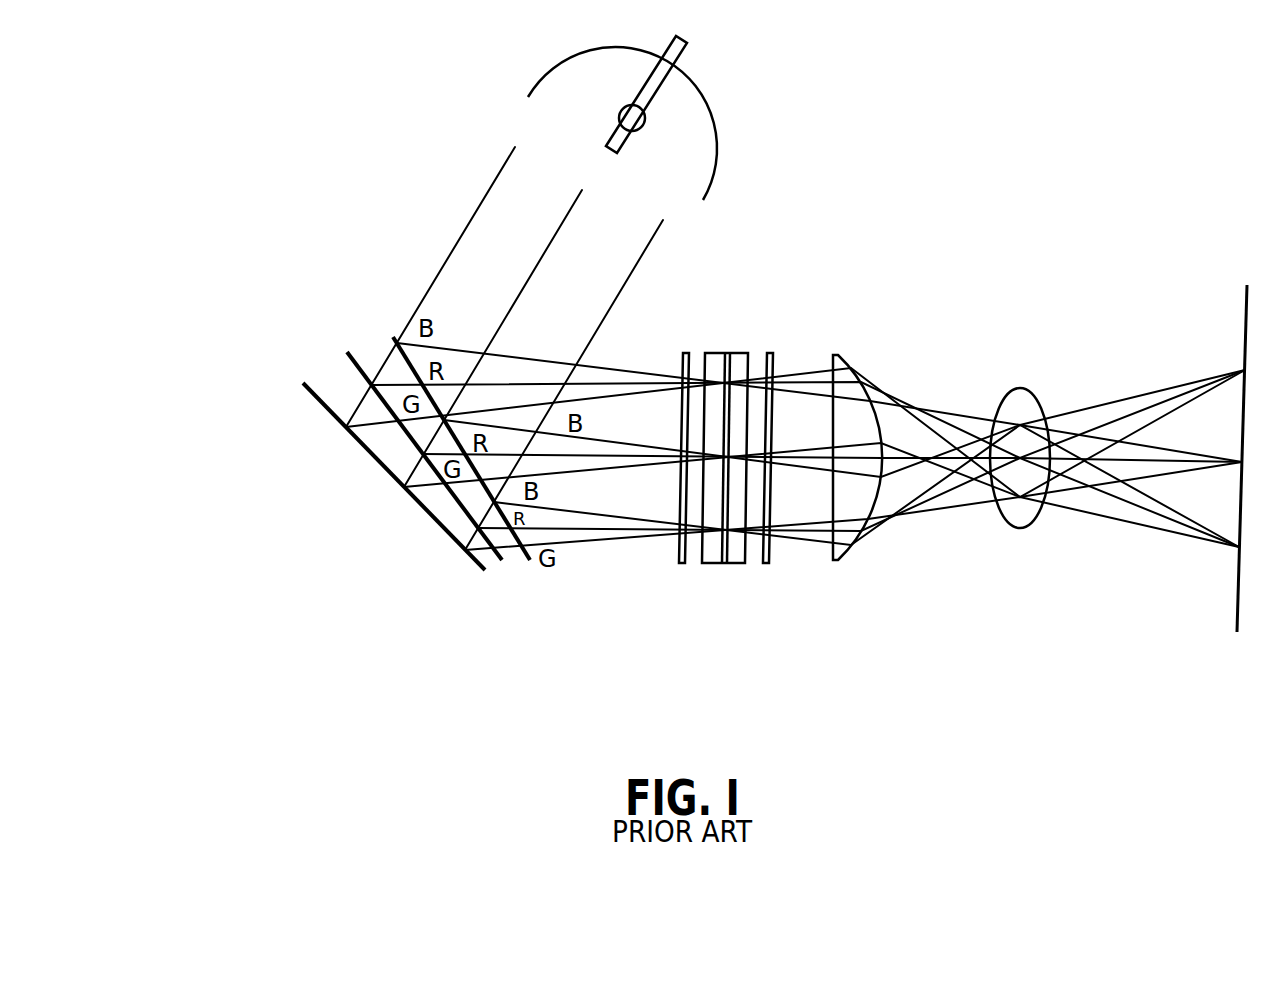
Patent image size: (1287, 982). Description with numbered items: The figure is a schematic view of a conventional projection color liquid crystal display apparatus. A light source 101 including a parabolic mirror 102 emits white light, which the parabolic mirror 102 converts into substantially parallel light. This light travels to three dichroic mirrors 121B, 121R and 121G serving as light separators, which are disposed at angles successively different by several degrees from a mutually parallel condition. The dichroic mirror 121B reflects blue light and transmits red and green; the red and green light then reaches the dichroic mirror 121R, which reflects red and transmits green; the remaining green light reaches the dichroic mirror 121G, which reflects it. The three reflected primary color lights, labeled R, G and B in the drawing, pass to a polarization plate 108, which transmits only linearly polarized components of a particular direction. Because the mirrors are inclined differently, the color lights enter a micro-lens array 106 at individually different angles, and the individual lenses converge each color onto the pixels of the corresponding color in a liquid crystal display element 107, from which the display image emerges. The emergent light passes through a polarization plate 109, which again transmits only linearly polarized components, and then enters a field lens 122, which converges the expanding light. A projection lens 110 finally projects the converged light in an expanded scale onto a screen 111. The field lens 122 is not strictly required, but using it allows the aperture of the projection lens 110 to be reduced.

The light source 101 is at (643, 123).
The parabolic mirror 102 is at (717, 143).
The dichroic mirror 121B is at (393, 337).
The dichroic mirror 121R is at (352, 358).
The dichroic mirror 121G is at (317, 392).
The micro-lens array 106 is at (713, 564).
The liquid crystal display element 107 is at (740, 353).
The polarization plate 108 is at (678, 562).
The polarization plate 109 is at (768, 560).
The field lens 122 is at (840, 562).
The projection lens 110 is at (1013, 388).
The screen 111 is at (1247, 287).